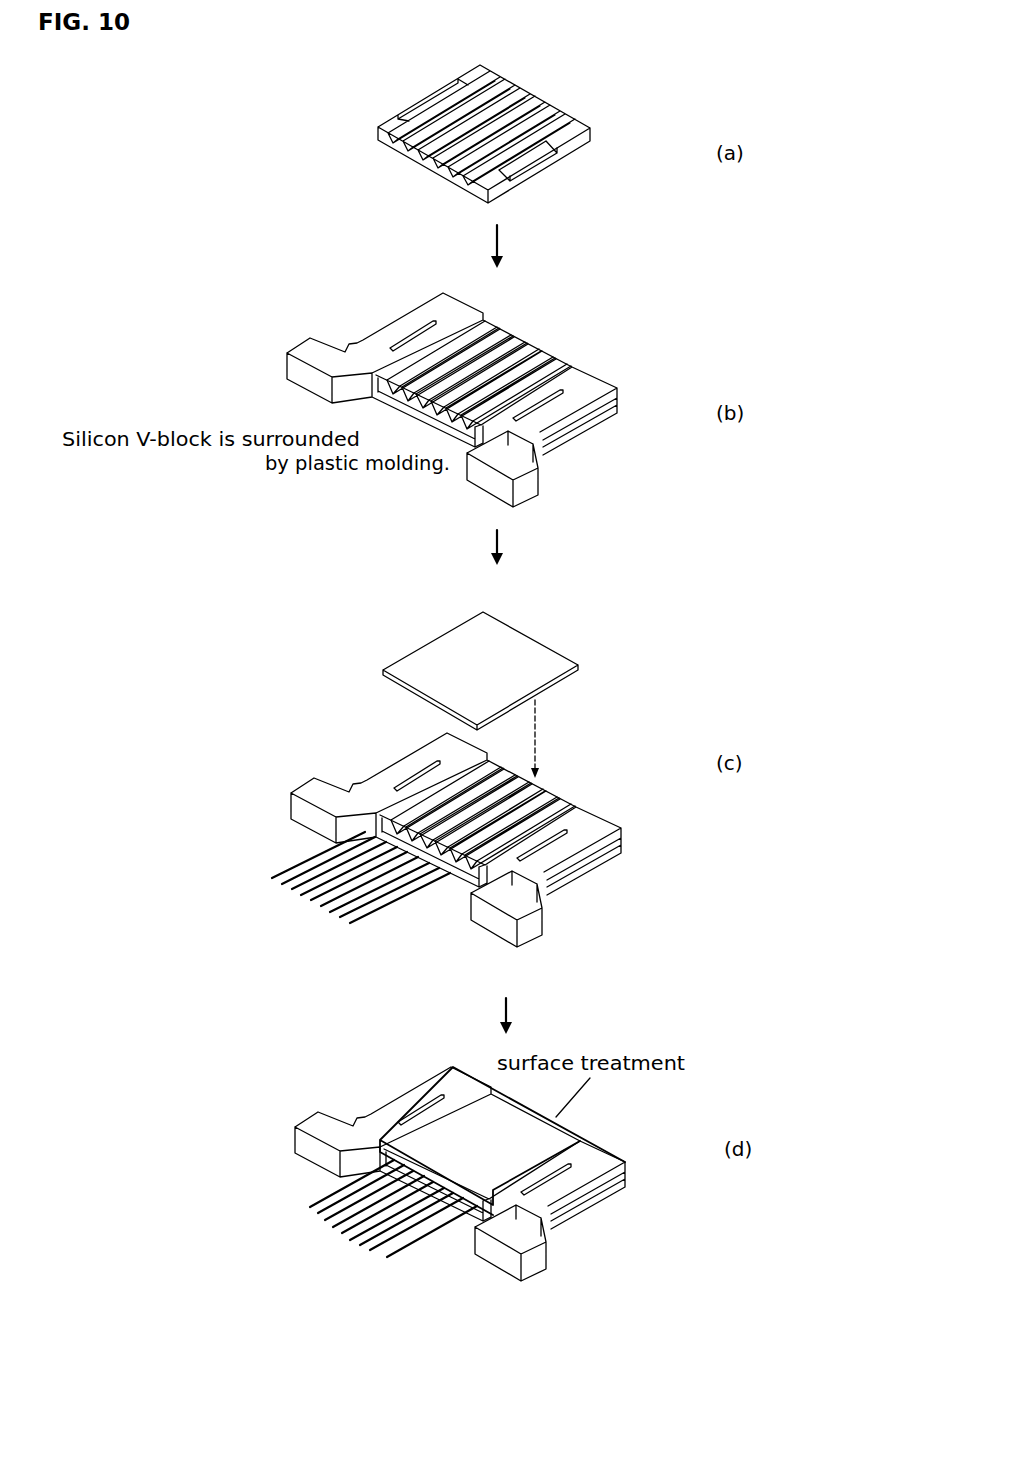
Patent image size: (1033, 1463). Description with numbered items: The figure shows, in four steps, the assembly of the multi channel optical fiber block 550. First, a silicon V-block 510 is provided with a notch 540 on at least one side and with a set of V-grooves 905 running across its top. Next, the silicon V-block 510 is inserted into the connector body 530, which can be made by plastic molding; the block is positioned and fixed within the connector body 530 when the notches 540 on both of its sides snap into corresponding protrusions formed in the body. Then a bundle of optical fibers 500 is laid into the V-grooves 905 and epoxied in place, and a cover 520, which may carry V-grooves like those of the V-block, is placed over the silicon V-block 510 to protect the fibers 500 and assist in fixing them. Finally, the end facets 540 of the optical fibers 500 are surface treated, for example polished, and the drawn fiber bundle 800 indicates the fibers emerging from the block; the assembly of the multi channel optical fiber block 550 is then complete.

The silicon V-block 510 is at (433, 97).
The notch 540 is at (548, 154).
The connector body 530 is at (580, 386).
The V-grooves 905 is at (503, 330).
The multi channel optical fiber block 550 is at (302, 1093).
The cover 520 is at (450, 653).
The optical fibers 500 is at (397, 905).
The optical fiber ribbon 800 is at (408, 1243).